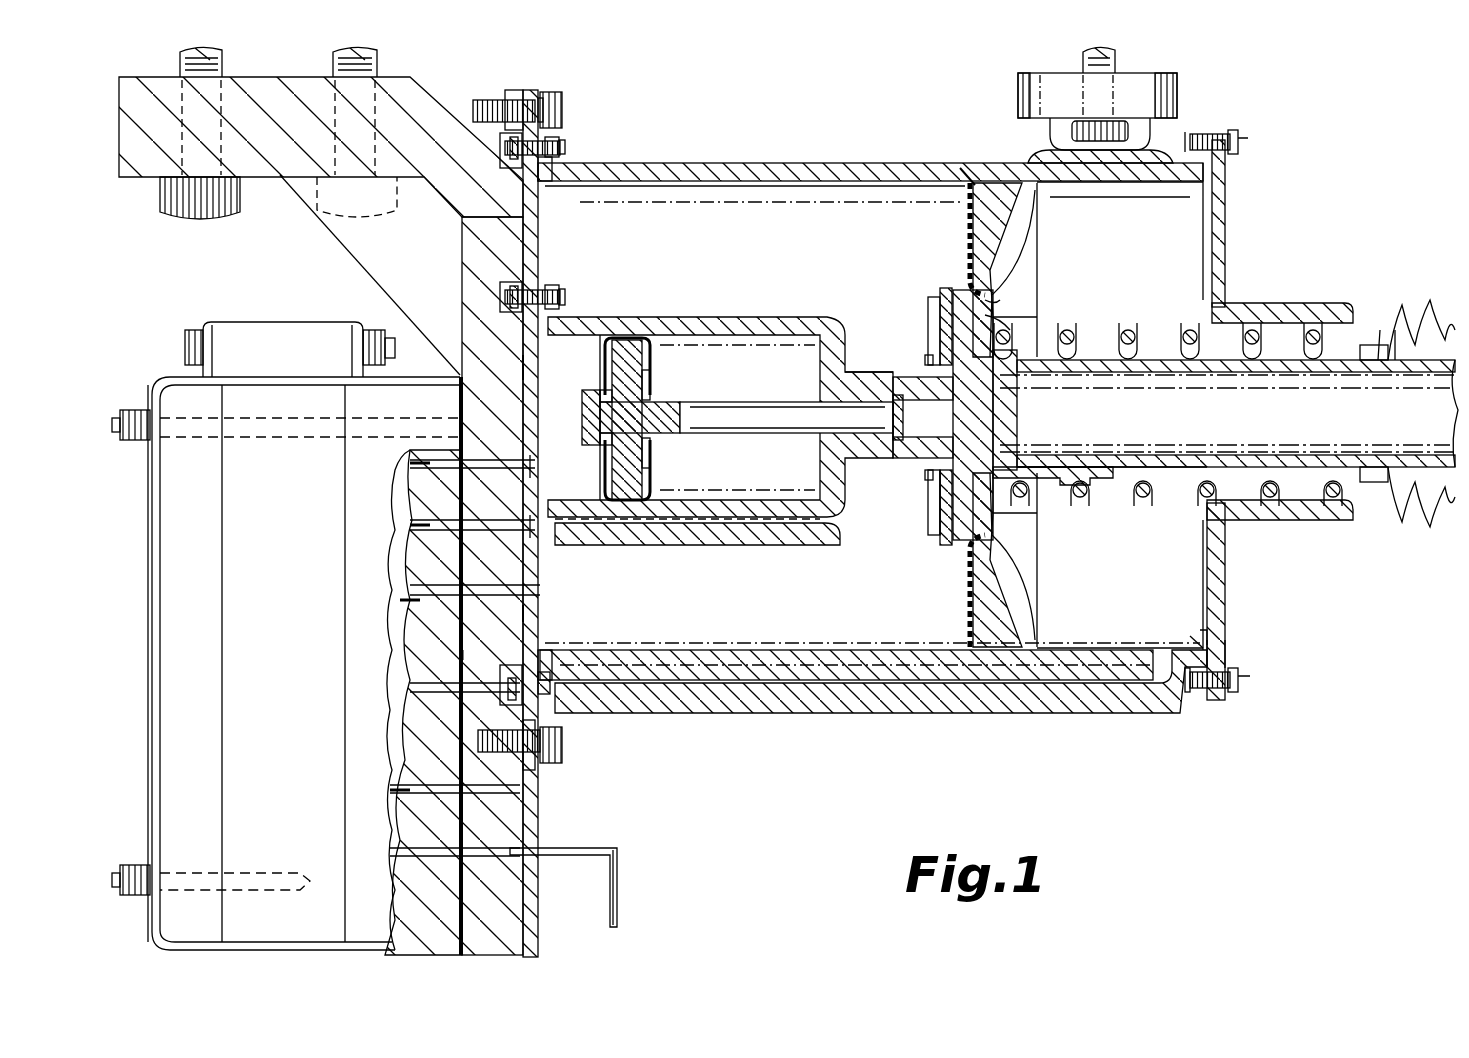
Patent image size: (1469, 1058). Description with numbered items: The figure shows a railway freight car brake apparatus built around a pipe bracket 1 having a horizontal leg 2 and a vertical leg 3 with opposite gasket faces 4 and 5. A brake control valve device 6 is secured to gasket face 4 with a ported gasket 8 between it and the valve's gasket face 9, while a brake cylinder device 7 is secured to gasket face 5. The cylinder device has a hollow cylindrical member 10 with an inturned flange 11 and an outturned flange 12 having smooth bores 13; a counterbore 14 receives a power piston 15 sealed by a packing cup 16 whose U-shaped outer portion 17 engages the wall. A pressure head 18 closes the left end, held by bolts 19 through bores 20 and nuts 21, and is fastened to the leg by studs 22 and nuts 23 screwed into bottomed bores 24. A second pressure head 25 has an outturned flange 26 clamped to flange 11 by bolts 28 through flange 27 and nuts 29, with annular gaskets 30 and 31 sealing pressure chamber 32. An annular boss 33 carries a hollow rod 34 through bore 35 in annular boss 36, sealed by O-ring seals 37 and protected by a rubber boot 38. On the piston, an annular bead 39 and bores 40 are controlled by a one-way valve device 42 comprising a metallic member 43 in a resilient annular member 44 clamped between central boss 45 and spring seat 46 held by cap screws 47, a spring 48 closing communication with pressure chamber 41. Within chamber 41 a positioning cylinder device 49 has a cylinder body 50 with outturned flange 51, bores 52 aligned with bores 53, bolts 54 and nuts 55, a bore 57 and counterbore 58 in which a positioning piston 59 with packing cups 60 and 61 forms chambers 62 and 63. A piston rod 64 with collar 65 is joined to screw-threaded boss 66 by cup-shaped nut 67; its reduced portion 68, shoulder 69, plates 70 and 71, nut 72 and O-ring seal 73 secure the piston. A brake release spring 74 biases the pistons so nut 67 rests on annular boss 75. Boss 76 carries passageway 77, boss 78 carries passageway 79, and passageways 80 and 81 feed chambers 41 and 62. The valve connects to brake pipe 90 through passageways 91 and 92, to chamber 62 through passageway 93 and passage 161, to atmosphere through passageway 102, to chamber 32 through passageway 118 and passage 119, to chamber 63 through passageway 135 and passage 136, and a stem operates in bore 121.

The pipe bracket 1 is at (298, 192).
The horizontal leg 2 is at (300, 92).
The vertical leg 3 is at (470, 360).
The gasket face 4 is at (463, 380).
The gasket face 5 is at (530, 613).
The brake control valve device 6 is at (388, 370).
The brake cylinder device 7 is at (812, 156).
The ported gasket 8 is at (462, 773).
The gasket face 9 is at (460, 655).
The hollow cylindrical member 10 is at (765, 163).
The inturned flange 11 is at (1195, 640).
The outturned flange 12 is at (560, 133).
The smooth bores 13 is at (560, 153).
The counterbore 14 is at (700, 183).
The power piston 15 is at (1015, 260).
The packing cup 16 is at (967, 228).
The outer portion 17 is at (973, 175).
The pressure head 18 is at (539, 228).
The bolts 19 is at (560, 180).
The smooth bores 20 is at (502, 148).
The nuts 21 is at (512, 155).
The studs 22 is at (508, 90).
The nuts 23 is at (556, 92).
The bottomed bores 24 is at (478, 100).
The second pressure head 25 is at (1285, 305).
The outturned flange 26 is at (1220, 243).
The outturned flange 27 is at (1197, 133).
The bolts 28 is at (1246, 143).
The nut 29 is at (1233, 130).
The annular gasket 30 is at (1226, 648).
The annular gasket 31 is at (1220, 627).
The pressure chamber 32 is at (1185, 222).
The annular boss 33 is at (1053, 467).
The hollow rod 34 is at (1175, 467).
The bore 35 is at (1362, 423).
The annular boss 36 is at (1400, 355).
The O-ring seal 37 is at (1367, 362).
The rubber boot 38 is at (1402, 312).
The annular bead 39 is at (990, 292).
The bores 40 is at (985, 312).
The pressure chamber 41 is at (866, 210).
The one-way valve device 42 is at (948, 285).
The annular metallic member 43 is at (945, 535).
The annular member 44 is at (962, 550).
The central boss 45 is at (980, 446).
The spring seat 46 is at (928, 303).
The cap screws 47 is at (922, 360).
The spring 48 is at (935, 520).
The positioning cylinder device 49 is at (733, 315).
The cylinder body 50 is at (715, 335).
The outturned flange 51 is at (555, 290).
The smooth bores 52 is at (560, 287).
The smooth bores 53 is at (522, 290).
The bolts 54 is at (560, 302).
The nuts 55 is at (515, 308).
The bore 57 is at (880, 414).
The counterbore 58 is at (790, 335).
The positioning piston 59 is at (612, 378).
The packing cup 60 is at (650, 468).
The packing cup 61 is at (606, 475).
The chamber 62 is at (535, 367).
The chamber 63 is at (685, 340).
The piston rod 64 is at (758, 405).
The collar 65 is at (900, 450).
The screw-threaded boss 66 is at (912, 385).
The cup-shaped nut 67 is at (885, 440).
The portion of reduced diameter 68 is at (583, 420).
The shoulder 69 is at (650, 452).
The first annular plate 70 is at (650, 385).
The second annular plate 71 is at (600, 440).
The nut 72 is at (600, 402).
The O-ring seal 73 is at (645, 403).
The brake release spring 74 is at (1130, 335).
The annular boss 75 is at (870, 385).
The longitudinally extending boss 76 is at (862, 700).
The passageway 77 is at (758, 680).
The longitudinally extending boss 78 is at (705, 530).
The passageway 79 is at (650, 522).
The passageway 80 is at (538, 593).
The passageway 81 is at (520, 470).
The brake pipe 90 is at (617, 888).
The passageway 91 is at (400, 852).
The passageway 92 is at (515, 857).
The passageway 93 is at (425, 595).
The passageway 102 is at (402, 790).
The passageway 118 is at (420, 690).
The passage 119 is at (502, 665).
The bore 121 is at (540, 672).
The passageway 135 is at (412, 522).
The passage 136 is at (490, 520).
The passage 161 is at (420, 470).